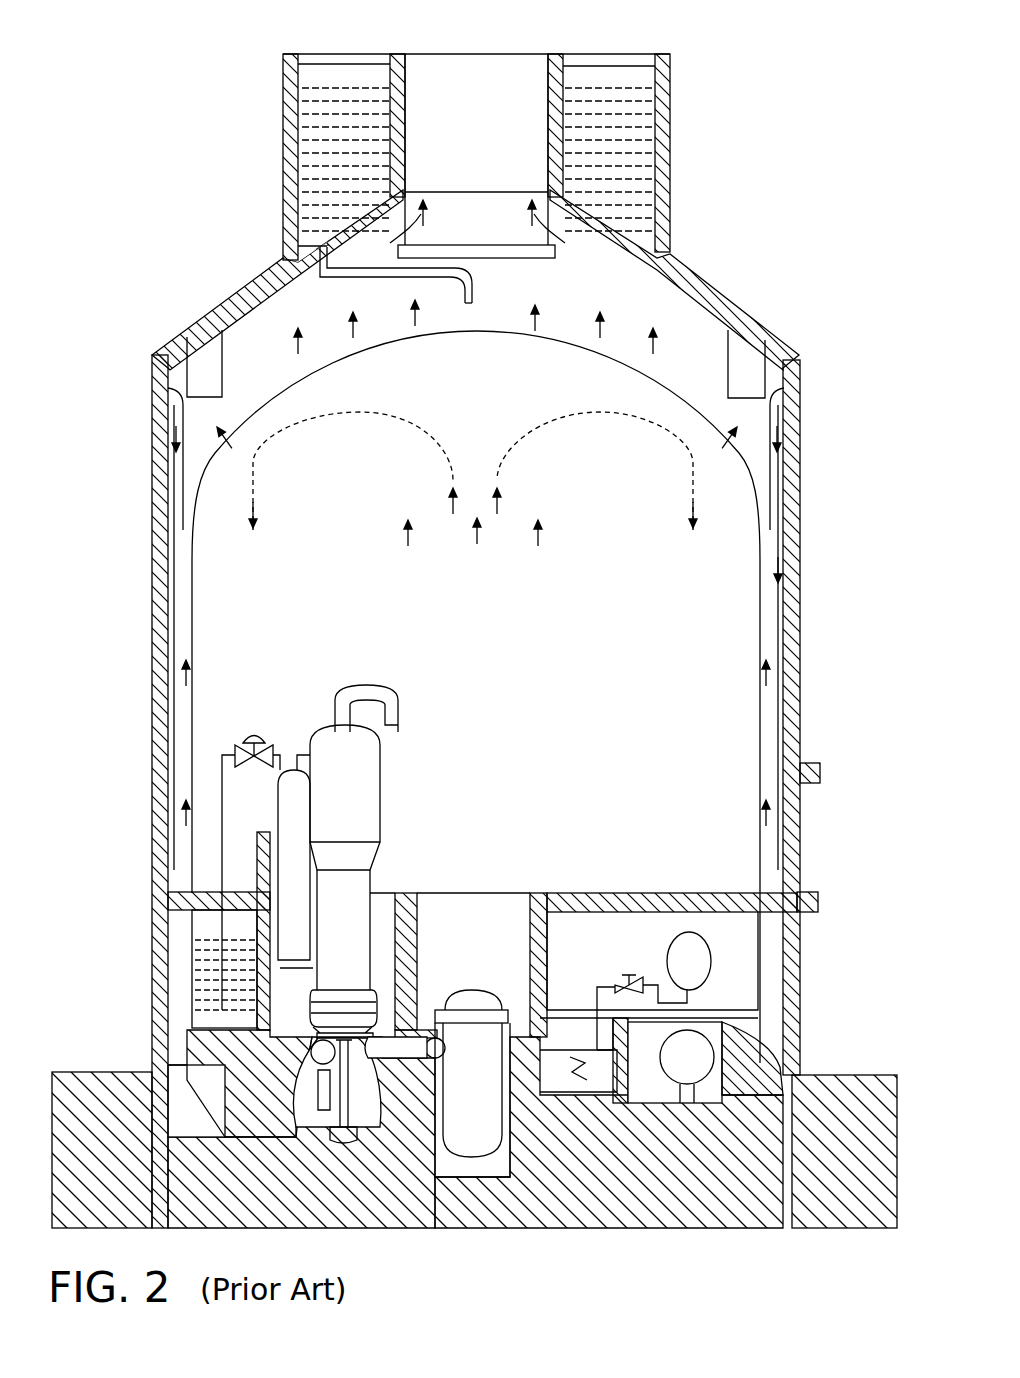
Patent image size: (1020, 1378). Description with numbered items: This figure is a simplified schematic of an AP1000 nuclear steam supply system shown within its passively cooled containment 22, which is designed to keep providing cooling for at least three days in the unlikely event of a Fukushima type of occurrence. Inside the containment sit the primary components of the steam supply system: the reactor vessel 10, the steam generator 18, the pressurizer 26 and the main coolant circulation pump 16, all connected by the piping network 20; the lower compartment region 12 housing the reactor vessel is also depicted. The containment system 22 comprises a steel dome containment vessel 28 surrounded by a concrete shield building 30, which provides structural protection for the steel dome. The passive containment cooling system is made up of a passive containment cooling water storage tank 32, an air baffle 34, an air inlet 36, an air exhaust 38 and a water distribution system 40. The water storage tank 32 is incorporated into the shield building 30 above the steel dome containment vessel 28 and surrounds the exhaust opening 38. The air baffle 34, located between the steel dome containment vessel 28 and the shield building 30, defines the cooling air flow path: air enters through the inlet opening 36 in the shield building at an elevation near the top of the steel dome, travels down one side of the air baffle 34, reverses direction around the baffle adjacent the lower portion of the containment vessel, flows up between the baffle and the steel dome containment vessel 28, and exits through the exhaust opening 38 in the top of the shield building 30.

The reactor vessel 10 is at (487, 1088).
The reactor cavity compartment 12 is at (477, 990).
The main coolant circulation pump 16 is at (300, 1128).
The steam generator 18 is at (378, 812).
The piping network 20 is at (362, 1130).
The passively cooled containment 22 is at (812, 566).
The pressurizer 26 is at (285, 760).
The steel dome containment vessel 28 is at (190, 592).
The concrete shield building 30 is at (800, 730).
The passive containment cooling water storage tank 32 is at (283, 180).
The air baffle 34 is at (153, 735).
The air inlet 36 is at (153, 390).
The air exhaust 38 is at (490, 70).
The water distribution system 40 is at (300, 300).